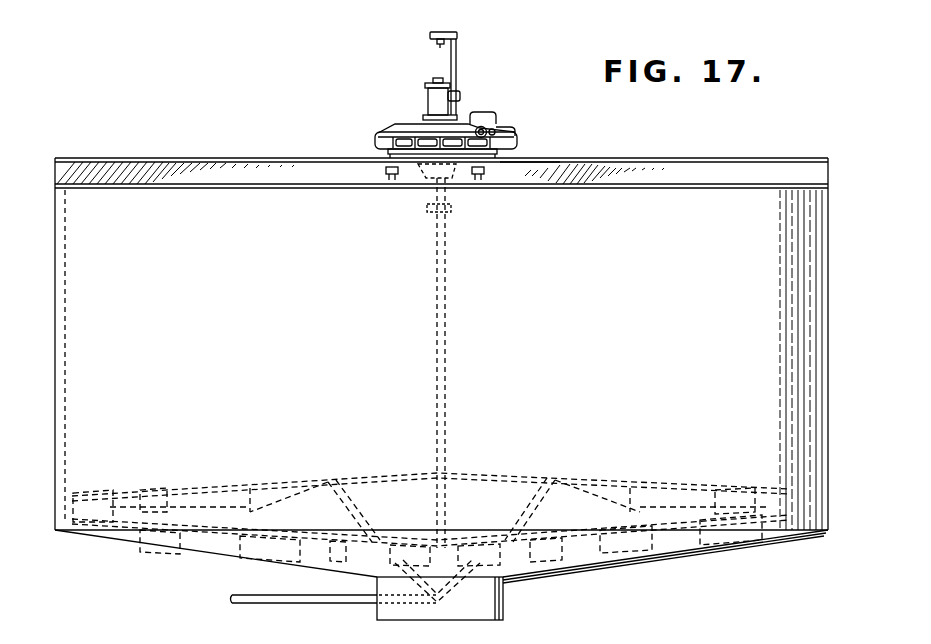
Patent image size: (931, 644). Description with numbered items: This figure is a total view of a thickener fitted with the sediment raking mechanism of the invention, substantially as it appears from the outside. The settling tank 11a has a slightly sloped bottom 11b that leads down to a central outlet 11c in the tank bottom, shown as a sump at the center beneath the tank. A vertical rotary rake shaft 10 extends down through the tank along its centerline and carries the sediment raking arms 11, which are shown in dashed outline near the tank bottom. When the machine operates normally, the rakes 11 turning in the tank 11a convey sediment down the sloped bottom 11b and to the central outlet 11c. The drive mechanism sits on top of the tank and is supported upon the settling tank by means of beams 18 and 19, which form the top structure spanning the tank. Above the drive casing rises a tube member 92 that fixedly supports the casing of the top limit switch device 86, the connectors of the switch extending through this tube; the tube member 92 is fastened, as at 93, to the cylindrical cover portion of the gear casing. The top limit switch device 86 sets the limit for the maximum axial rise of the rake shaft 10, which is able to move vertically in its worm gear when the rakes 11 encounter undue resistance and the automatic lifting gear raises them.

The top limit switch device 86 is at (426, 40).
The tube member 92 is at (458, 90).
The fastening 93 is at (460, 97).
The beam 19 is at (392, 182).
The beam 18 is at (541, 186).
The tank 11a is at (441, 344).
The vertical rotary rake shaft 10 is at (447, 352).
The sediment raking arms 11 is at (650, 510).
The sloped bottom 11b is at (650, 557).
The central outlet 11c is at (505, 590).